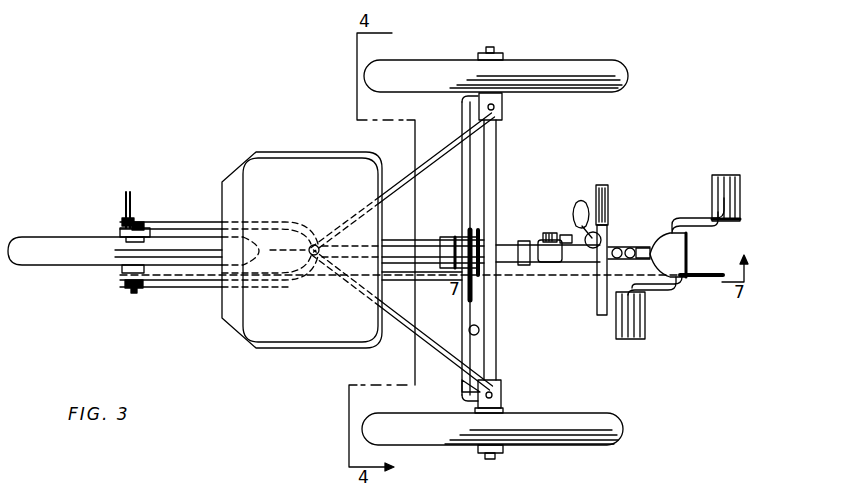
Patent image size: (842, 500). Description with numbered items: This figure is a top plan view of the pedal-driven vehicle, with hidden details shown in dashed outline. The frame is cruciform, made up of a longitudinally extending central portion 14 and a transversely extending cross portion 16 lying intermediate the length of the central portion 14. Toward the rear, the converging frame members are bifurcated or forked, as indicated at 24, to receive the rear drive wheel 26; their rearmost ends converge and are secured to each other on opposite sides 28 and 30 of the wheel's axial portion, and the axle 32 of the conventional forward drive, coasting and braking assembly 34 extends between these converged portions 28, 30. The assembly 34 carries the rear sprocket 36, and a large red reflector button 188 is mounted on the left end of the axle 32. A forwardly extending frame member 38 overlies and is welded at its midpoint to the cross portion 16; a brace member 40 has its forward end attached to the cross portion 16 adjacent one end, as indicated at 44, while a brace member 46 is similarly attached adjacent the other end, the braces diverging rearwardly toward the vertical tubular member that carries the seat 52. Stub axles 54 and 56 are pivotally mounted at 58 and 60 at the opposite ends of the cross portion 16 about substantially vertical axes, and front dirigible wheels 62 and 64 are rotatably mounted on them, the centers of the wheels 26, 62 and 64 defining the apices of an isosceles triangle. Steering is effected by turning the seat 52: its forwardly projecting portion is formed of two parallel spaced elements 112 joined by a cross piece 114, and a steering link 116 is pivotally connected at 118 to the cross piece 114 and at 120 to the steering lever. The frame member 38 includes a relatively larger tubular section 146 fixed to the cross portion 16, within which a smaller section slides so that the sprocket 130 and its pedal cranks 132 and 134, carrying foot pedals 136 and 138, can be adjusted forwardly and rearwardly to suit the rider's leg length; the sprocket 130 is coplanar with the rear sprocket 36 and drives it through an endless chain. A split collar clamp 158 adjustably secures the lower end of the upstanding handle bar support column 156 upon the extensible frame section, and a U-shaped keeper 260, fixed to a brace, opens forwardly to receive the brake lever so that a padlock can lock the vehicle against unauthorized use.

The longitudinally extending central portion 14 is at (443, 250).
The transversely extending cross portion 16 is at (493, 178).
The bifurcated or forked portion 24 is at (300, 219).
The drive wheel 26 is at (104, 234).
The rearmost converged portion 28 is at (148, 230).
The rearmost converged portion 30 is at (150, 291).
The axle 32 is at (140, 222).
The forward drive, coasting and braking assembly 34 is at (26, 245).
The rear sprocket 36 is at (124, 283).
The forwardly extending frame member 38 is at (391, 250).
The brace member 40 is at (441, 350).
The brace attachment point 44 is at (486, 378).
The brace member 46 is at (441, 158).
The seat 52 is at (262, 152).
The stub axle 54 is at (497, 459).
The stub axle 56 is at (494, 47).
The pivotal mounting 58 is at (496, 396).
The pivotal mounting 60 is at (498, 109).
The front dirigible wheel 62 is at (412, 443).
The front dirigible wheel 64 is at (548, 66).
The parallel spaced elements 112 is at (438, 268).
The cross piece 114 is at (455, 236).
The steering link 116 is at (468, 306).
The pivotal connection 118 is at (478, 230).
The pivotal connection 120 is at (479, 330).
The sprocket 130 is at (714, 280).
The pedal crank 132 is at (664, 290).
The pedal crank 134 is at (682, 226).
The foot pedal 136 is at (641, 339).
The foot pedal 138 is at (713, 180).
The larger tubular section 146 is at (512, 242).
The support column 156 is at (628, 247).
The clamp 158 is at (646, 249).
The red reflector button 188 is at (125, 198).
The U-shaped keeper 260 is at (548, 233).